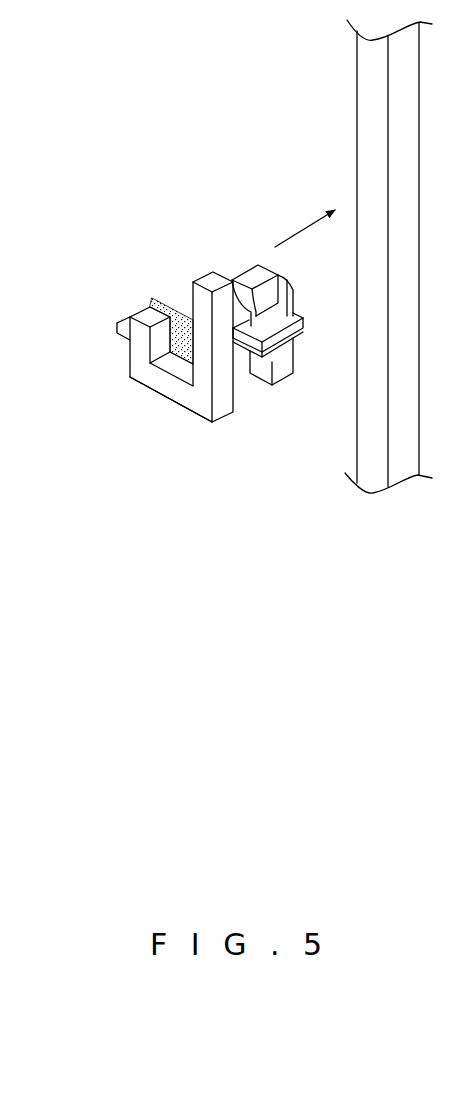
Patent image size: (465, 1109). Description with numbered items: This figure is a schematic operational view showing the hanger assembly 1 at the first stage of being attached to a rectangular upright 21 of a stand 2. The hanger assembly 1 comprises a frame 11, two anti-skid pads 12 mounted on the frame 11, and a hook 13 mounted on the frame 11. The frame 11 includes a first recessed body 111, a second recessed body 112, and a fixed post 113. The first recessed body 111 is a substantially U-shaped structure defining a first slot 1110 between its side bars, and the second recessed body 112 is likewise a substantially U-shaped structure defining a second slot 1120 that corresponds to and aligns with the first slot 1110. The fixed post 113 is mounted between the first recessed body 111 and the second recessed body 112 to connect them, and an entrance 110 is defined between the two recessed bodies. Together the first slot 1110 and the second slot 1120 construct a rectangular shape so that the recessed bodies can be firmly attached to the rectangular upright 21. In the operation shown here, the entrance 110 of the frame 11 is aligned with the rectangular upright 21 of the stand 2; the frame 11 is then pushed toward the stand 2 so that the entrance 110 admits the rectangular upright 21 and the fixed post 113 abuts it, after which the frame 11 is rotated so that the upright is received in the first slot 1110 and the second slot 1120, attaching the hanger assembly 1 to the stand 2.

The hanger assembly 1 is at (187, 334).
The stand 2 is at (340, 256).
The rectangular upright 21 is at (357, 101).
The frame 11 is at (153, 364).
The anti-skid pads 12 is at (152, 296).
The hook 13 is at (291, 299).
The entrance 110 is at (266, 272).
The first recessed body 111 is at (135, 350).
The second recessed body 112 is at (233, 410).
The fixed post 113 is at (155, 400).
The first slot 1110 is at (180, 304).
The second slot 1120 is at (247, 388).